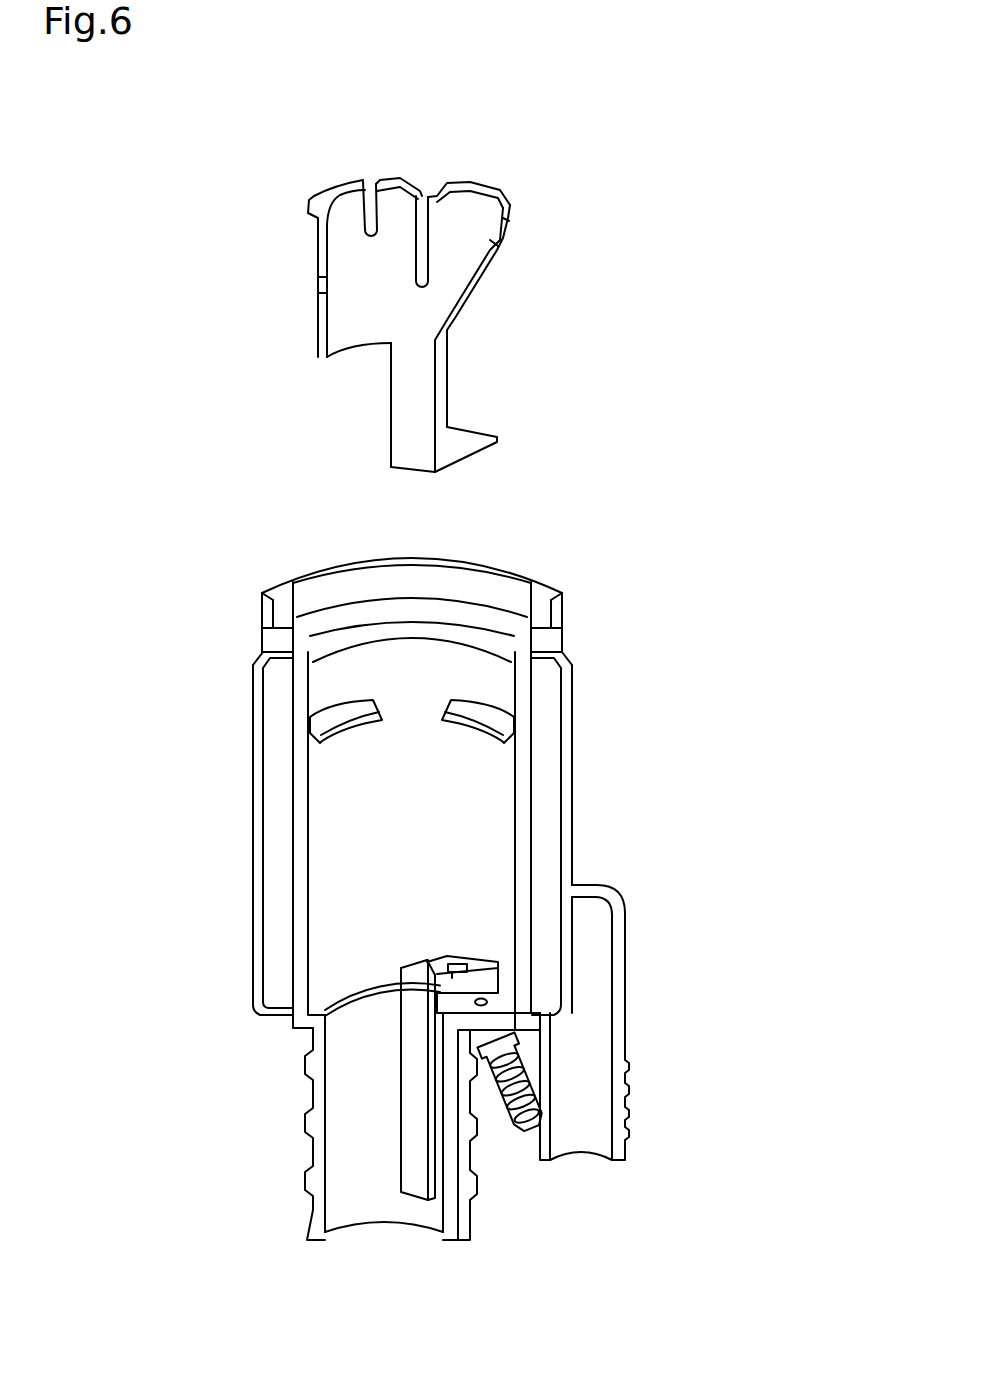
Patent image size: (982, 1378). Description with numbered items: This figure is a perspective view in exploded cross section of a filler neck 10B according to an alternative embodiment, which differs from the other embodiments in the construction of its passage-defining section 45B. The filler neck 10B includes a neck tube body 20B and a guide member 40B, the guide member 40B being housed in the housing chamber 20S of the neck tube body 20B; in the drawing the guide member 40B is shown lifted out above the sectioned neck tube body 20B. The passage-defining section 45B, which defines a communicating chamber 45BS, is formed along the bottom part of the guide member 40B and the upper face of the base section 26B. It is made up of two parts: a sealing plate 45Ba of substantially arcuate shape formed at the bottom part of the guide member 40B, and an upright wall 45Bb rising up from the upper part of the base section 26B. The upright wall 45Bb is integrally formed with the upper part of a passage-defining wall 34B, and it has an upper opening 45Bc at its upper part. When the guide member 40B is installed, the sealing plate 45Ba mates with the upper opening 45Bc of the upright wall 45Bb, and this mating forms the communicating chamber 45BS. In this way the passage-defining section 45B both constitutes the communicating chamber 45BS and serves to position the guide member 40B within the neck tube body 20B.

The filler neck 10B is at (637, 302).
The guide member 40B is at (497, 181).
The passage-defining section 45B is at (550, 435).
The sealing plate 45Ba is at (468, 437).
The neck tube body 20B is at (530, 710).
The housing chamber 20S is at (423, 829).
The passage-defining wall 34B is at (427, 1143).
The upright wall 45Bb is at (455, 962).
The upper opening 45Bc is at (470, 962).
The communicating chamber 45BS is at (488, 1000).
The base section 26B is at (487, 1023).